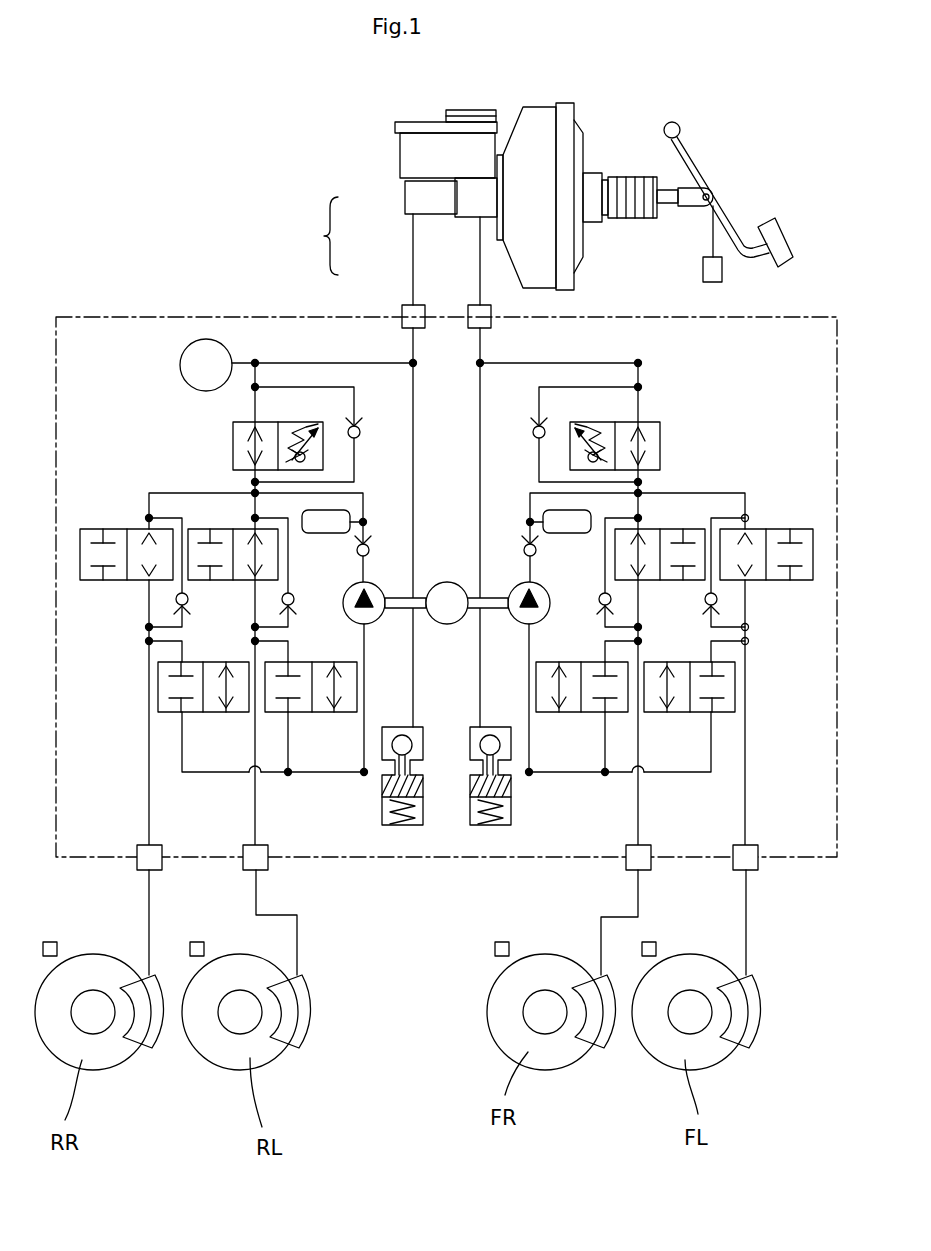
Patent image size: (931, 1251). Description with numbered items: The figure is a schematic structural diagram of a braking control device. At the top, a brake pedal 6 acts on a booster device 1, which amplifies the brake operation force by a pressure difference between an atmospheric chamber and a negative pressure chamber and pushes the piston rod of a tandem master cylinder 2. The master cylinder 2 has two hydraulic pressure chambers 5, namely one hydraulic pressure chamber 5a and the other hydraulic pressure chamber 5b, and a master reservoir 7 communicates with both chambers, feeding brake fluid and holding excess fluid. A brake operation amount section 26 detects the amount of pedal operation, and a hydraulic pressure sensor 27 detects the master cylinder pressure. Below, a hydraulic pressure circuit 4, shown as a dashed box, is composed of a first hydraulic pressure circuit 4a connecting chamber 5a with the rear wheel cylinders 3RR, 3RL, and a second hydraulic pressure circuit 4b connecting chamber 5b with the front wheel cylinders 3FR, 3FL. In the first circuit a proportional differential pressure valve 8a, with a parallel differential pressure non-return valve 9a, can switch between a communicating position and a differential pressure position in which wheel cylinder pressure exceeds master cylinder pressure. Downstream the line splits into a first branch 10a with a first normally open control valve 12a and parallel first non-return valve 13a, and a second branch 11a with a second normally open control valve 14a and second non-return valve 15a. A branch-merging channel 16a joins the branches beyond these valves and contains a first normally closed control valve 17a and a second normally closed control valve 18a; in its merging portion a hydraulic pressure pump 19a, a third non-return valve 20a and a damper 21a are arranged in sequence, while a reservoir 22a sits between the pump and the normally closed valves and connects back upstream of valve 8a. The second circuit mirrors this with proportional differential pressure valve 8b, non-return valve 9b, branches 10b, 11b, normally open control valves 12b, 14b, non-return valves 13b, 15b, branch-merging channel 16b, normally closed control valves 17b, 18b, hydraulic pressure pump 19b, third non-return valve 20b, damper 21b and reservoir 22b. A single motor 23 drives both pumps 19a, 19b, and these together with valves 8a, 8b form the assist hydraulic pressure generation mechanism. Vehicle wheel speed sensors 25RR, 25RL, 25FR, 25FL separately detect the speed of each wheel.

The booster device 1 is at (533, 118).
The master cylinder 2 is at (400, 190).
The hydraulic pressure circuit 4 is at (92, 310).
The first hydraulic pressure circuit 4a is at (405, 288).
The second hydraulic pressure circuit 4b is at (488, 290).
The hydraulic pressure chambers 5 is at (320, 236).
The hydraulic pressure chamber 5a is at (414, 194).
The hydraulic pressure chamber 5b is at (470, 210).
The brake pedal 6 is at (768, 222).
The master reservoir 7 is at (422, 138).
The proportional differential pressure valve 8a is at (233, 445).
The proportional differential pressure valve 8b is at (660, 440).
The differential pressure non-return valve 9a is at (360, 427).
The differential pressure non-return valve 9b is at (535, 430).
The first branch 10a is at (165, 493).
The first branch 10b is at (640, 514).
The second branch 11a is at (254, 510).
The second branch 11b is at (740, 493).
The first normally open control valve 12a is at (118, 582).
The first normally open control valve 12b is at (617, 556).
The first non-return valve 13a is at (188, 604).
The first non-return valve 13b is at (609, 606).
The second normally open control valve 14a is at (279, 556).
The second normally open control valve 14b is at (776, 586).
The second non-return valve 15a is at (292, 606).
The second non-return valve 15b is at (707, 606).
The branch-merging channel 16a is at (213, 775).
The branch-merging channel 16b is at (680, 775).
The first normally closed control valve 17a is at (190, 714).
The first normally closed control valve 17b is at (598, 714).
The second normally closed control valve 18a is at (296, 714).
The second normally closed control valve 18b is at (678, 714).
The hydraulic pressure pump 19a is at (370, 620).
The hydraulic pressure pump 19b is at (523, 620).
The third non-return valve 20a is at (369, 543).
The third non-return valve 20b is at (527, 543).
The damper 21a is at (328, 510).
The damper 21b is at (565, 510).
The reservoir 22a is at (380, 812).
The reservoir 22b is at (513, 812).
The motor 23 is at (447, 580).
The vehicle wheel speed sensor 25RR is at (50, 942).
The vehicle wheel speed sensor 25RL is at (198, 942).
The vehicle wheel speed sensor 25FR is at (494, 948).
The vehicle wheel speed sensor 25FL is at (657, 948).
The brake operation amount section 26 is at (703, 270).
The hydraulic pressure sensor 27 is at (180, 365).
The wheel cylinder 3RR is at (148, 1040).
The wheel cylinder 3RL is at (298, 1030).
The wheel cylinder 3FR is at (605, 1040).
The wheel cylinder 3FL is at (750, 1035).